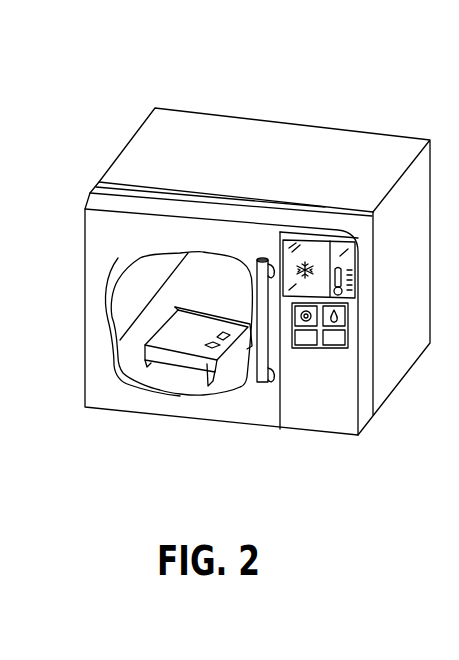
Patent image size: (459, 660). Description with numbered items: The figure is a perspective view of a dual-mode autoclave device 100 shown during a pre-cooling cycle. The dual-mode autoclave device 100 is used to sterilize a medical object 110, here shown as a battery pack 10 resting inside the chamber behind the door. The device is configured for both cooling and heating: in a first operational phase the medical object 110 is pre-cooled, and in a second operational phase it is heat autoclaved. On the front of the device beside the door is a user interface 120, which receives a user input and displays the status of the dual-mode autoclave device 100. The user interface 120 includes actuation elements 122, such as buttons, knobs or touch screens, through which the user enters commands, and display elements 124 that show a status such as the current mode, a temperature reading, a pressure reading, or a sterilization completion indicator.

The dual-mode autoclave device 100 is at (131, 96).
The medical object 110 is at (162, 338).
The battery pack 10 is at (150, 352).
The user interface 120 is at (328, 358).
The actuation elements 122 is at (328, 305).
The display elements 124 is at (345, 247).